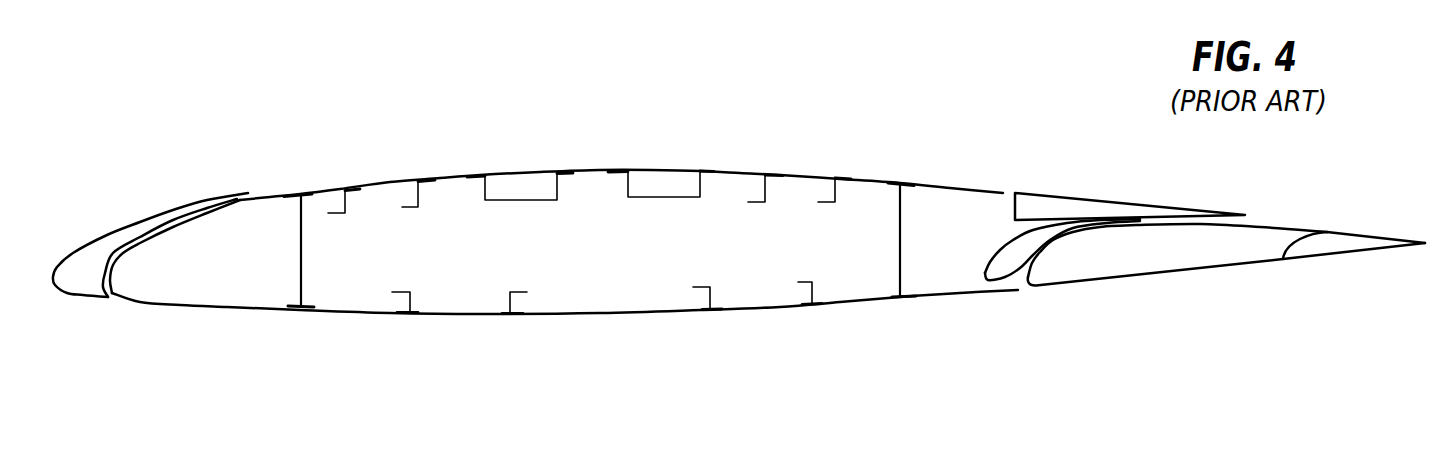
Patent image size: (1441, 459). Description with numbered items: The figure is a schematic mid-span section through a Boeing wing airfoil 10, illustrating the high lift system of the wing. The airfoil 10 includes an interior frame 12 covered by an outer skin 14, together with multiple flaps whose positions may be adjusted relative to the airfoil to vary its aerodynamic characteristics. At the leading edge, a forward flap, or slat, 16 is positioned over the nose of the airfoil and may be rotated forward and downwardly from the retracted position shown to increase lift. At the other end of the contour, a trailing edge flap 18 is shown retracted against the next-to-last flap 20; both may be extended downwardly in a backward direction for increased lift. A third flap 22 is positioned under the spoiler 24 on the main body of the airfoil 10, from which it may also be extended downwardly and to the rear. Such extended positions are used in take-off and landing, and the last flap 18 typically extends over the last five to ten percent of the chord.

The airfoil 10 is at (452, 146).
The interior frame 12 is at (545, 200).
The outer skin 14 is at (562, 313).
The forward flap, or slat 16 is at (115, 233).
The trailing edge flap 18 is at (1330, 258).
The next-to-last flap 20 is at (1153, 277).
The third flap 22 is at (993, 272).
The spoiler 24 is at (1052, 207).